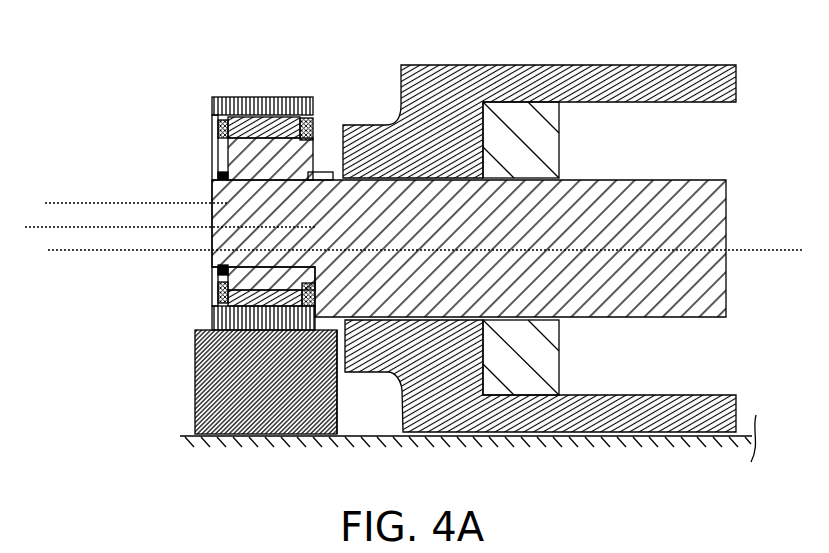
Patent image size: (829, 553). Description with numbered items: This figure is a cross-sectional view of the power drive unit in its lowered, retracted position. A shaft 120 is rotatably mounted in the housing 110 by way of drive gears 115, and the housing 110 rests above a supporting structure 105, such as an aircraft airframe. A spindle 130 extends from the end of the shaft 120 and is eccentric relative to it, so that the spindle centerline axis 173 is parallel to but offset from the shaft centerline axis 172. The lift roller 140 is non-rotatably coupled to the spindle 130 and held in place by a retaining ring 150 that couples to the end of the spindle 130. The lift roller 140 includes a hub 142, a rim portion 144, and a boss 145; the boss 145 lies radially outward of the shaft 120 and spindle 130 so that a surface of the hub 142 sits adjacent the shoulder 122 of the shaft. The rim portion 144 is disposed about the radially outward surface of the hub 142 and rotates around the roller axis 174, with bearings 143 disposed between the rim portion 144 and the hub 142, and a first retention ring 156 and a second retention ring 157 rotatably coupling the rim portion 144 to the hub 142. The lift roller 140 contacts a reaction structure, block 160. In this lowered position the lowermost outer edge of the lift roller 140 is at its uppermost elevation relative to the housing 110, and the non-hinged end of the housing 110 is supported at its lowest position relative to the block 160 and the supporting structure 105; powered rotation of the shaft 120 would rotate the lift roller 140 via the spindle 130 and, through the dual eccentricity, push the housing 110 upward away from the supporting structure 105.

The supporting structure 105 is at (338, 470).
The housing 110 is at (645, 82).
The drive gears 115 is at (551, 148).
The shaft 120 is at (708, 233).
The shoulder 122 is at (297, 338).
The spindle 130 is at (213, 212).
The lift roller 140 is at (212, 98).
The hub 142 is at (240, 160).
The bearings 143 is at (258, 112).
The rim portion 144 is at (213, 105).
The boss 145 is at (322, 172).
The retaining ring 150 is at (218, 176).
The first retention ring 156 is at (313, 123).
The second retention ring 157 is at (219, 129).
The block 160 is at (257, 403).
The shaft centerline axis 172 is at (63, 250).
The spindle centerline axis 173 is at (42, 228).
The roller axis 174 is at (65, 203).